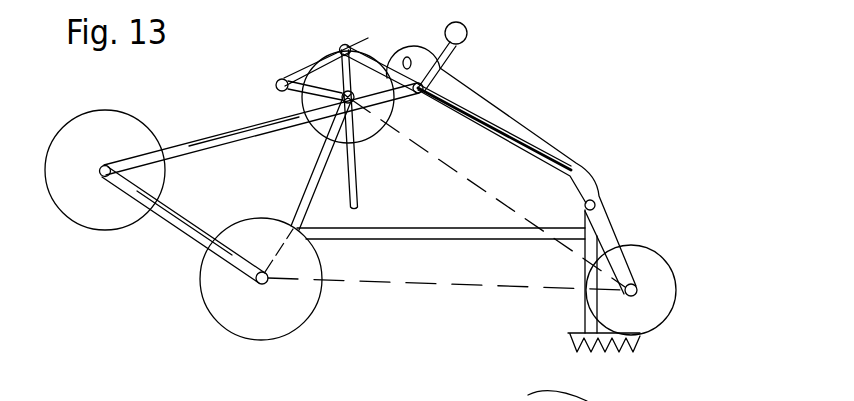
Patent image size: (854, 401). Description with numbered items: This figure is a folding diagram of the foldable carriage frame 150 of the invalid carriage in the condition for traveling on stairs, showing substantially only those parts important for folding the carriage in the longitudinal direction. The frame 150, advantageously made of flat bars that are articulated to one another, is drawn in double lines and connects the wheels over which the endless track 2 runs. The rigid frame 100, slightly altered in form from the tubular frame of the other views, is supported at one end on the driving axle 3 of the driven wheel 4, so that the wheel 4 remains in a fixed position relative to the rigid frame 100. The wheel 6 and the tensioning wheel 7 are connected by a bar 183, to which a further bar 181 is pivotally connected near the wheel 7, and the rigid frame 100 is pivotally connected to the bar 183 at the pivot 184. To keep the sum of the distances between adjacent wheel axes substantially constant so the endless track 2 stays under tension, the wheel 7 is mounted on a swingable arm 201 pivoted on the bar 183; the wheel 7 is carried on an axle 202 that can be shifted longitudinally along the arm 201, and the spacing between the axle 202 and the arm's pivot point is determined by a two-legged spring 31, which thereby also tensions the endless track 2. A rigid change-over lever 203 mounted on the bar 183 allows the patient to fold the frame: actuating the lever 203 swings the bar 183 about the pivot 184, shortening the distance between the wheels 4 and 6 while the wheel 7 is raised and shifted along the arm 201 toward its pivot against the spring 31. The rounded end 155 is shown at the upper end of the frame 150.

The endless track 2 is at (620, 341).
The driving axle 3 is at (254, 284).
The driven wheel 4 is at (208, 283).
The wheel 6 is at (647, 323).
The tensioning wheel 7 is at (331, 52).
The two-legged spring 31 is at (281, 78).
The rigid frame 100 is at (468, 236).
The carriage frame 150 is at (512, 140).
The rounded end of frame arm 155 is at (407, 56).
The further bar 181 is at (174, 228).
The bar 183 is at (476, 116).
The pivot 184 is at (596, 205).
The swingable arm 201 is at (352, 165).
The axle 202 is at (342, 100).
The change-over lever 203 is at (455, 58).